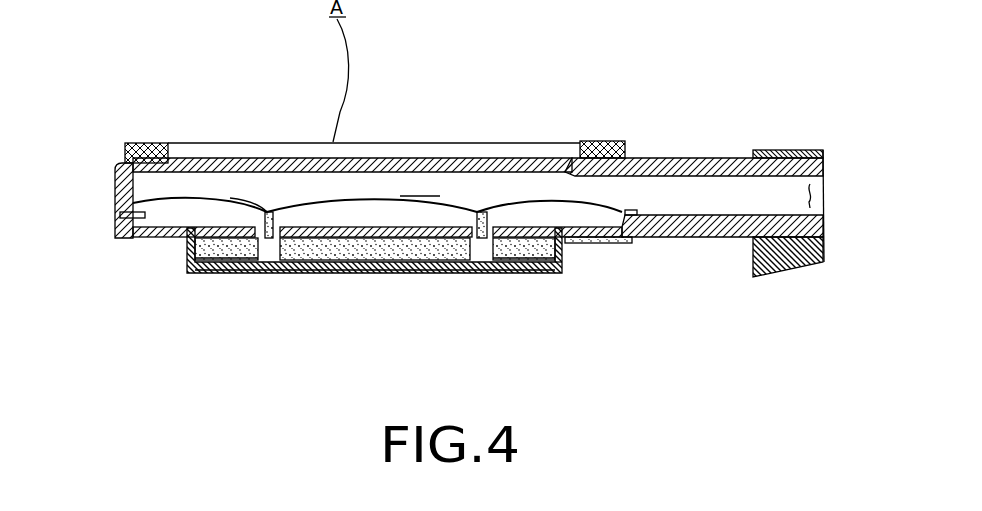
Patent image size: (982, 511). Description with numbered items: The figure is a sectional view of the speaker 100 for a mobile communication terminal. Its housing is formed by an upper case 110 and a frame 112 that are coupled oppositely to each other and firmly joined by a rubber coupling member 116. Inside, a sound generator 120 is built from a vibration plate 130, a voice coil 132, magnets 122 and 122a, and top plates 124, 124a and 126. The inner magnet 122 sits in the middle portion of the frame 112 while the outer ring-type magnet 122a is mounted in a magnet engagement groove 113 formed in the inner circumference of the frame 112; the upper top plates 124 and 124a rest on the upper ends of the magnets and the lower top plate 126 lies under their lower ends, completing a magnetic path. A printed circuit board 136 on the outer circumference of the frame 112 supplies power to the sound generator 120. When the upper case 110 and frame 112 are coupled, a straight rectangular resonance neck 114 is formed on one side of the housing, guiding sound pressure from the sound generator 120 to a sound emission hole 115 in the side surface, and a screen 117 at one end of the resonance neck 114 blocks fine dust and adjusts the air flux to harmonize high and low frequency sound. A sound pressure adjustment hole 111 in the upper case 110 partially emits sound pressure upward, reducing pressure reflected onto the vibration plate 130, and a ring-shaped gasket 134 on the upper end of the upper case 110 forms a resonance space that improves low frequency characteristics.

The speaker 100 is at (623, 81).
The upper case 110 is at (115, 183).
The sound pressure adjustment hole 111 is at (238, 157).
The frame 112 is at (583, 245).
The magnet engagement groove 113 is at (567, 272).
The resonance neck 114 is at (730, 223).
The sound emission hole 115 is at (823, 202).
The coupling member 116 is at (800, 150).
The screen 117 is at (823, 183).
The sound generator 120 is at (440, 178).
The magnet 122 is at (345, 242).
The magnet 122a is at (219, 244).
The top plate 124 is at (397, 226).
The top plate 124a is at (217, 236).
The lower top plate 126 is at (398, 260).
The vibration plate 130 is at (354, 197).
The voice coil 132 is at (300, 196).
The gasket 134 is at (627, 141).
The printed circuit board 136 is at (600, 243).